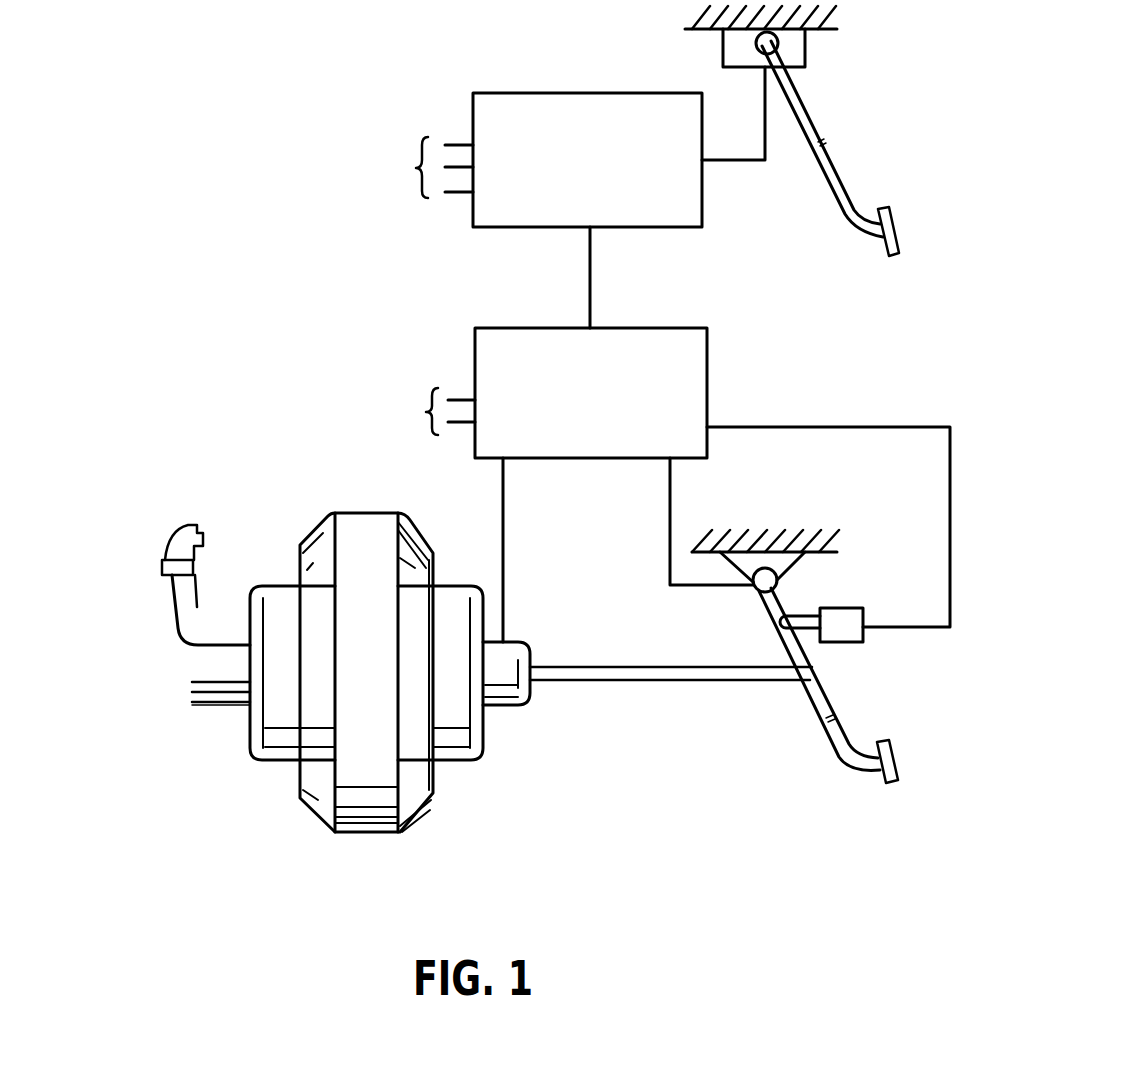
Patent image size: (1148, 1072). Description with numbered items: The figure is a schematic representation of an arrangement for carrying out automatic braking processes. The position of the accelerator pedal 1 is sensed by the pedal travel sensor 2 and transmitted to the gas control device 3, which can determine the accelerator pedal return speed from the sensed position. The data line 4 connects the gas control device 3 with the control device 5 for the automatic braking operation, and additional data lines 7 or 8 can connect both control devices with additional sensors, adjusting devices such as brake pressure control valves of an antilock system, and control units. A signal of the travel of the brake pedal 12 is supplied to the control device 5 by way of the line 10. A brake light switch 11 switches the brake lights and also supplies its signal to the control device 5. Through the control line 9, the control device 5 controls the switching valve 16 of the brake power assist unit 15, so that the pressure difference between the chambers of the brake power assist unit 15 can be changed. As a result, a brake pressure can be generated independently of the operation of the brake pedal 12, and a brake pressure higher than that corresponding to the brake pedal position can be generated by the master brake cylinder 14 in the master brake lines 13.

The accelerator pedal 1 is at (830, 155).
The pedal travel sensor 2 is at (730, 46).
The gas control device 3 is at (483, 110).
The data line 4 is at (588, 272).
The control device 5 is at (490, 360).
The additional data lines 7 is at (416, 168).
The additional data lines 8 is at (426, 412).
The control line 9 is at (505, 574).
The line 10 is at (666, 507).
The brake light switch 11 is at (858, 645).
The brake pedal 12 is at (822, 727).
The master brake lines 13 is at (248, 684).
The master brake cylinder 14 is at (187, 668).
The brake power assist unit 15 is at (314, 537).
The switching valve 16 is at (527, 702).